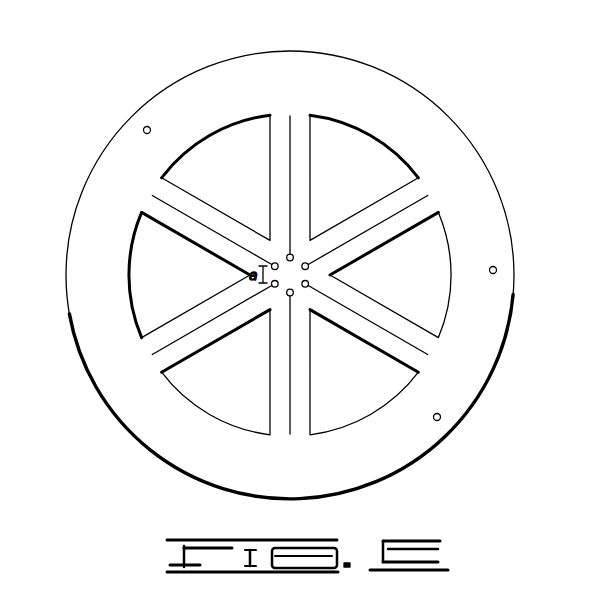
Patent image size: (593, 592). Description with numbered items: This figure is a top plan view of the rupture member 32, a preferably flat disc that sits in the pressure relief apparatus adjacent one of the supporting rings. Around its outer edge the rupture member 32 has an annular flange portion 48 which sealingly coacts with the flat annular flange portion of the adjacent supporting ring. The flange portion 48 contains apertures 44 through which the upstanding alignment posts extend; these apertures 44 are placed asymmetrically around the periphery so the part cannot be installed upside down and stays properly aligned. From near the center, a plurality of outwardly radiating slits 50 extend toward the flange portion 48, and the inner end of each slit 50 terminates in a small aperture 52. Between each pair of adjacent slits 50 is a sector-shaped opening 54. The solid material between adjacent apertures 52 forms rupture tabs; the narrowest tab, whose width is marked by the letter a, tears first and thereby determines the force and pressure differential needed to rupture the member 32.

The rupture member 32 is at (372, 50).
The apertures 44 is at (145, 127).
The annular flange portion 48 is at (500, 229).
The slits 50 is at (288, 194).
The apertures 52 is at (308, 287).
The sector-shaped openings 54 is at (225, 158).